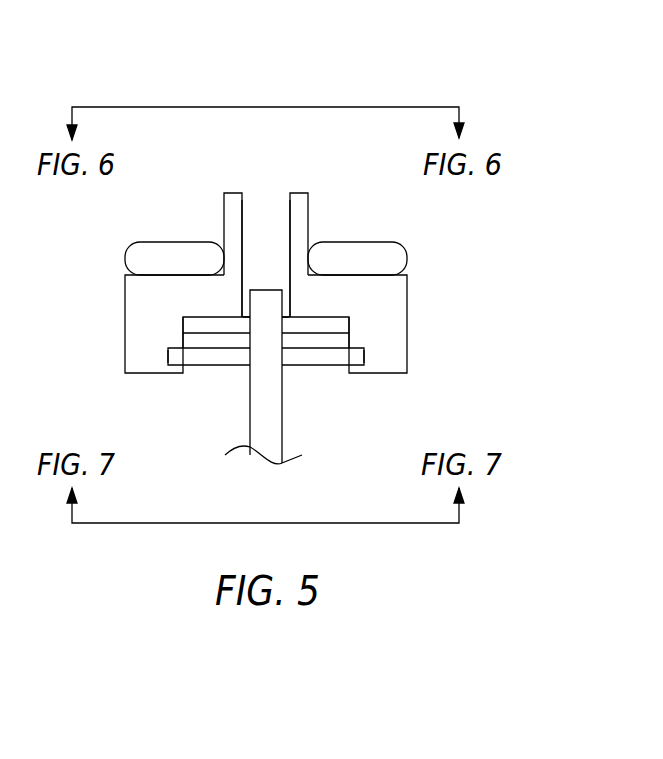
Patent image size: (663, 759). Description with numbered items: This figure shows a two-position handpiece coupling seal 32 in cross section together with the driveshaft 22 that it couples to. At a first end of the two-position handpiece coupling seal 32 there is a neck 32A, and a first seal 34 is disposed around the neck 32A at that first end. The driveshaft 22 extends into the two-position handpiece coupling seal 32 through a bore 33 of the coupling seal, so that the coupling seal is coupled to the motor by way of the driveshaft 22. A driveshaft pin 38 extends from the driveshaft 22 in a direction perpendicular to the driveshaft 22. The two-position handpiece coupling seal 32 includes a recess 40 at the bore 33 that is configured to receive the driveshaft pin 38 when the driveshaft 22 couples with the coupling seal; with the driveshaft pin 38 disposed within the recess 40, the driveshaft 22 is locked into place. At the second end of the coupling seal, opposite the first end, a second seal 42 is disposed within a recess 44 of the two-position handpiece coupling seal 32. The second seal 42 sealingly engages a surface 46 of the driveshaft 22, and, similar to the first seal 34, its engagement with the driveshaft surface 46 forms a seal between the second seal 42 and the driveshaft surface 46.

The two-position handpiece coupling seal 32 is at (430, 36).
The neck 32A is at (223, 200).
The bore 33 is at (244, 272).
The first seal 34 is at (152, 242).
The recess 44 is at (216, 315).
The second seal 42 is at (183, 325).
The recess 40 is at (168, 357).
The driveshaft pin 38 is at (195, 358).
The surface 46 is at (245, 320).
The driveshaft 22 is at (250, 424).